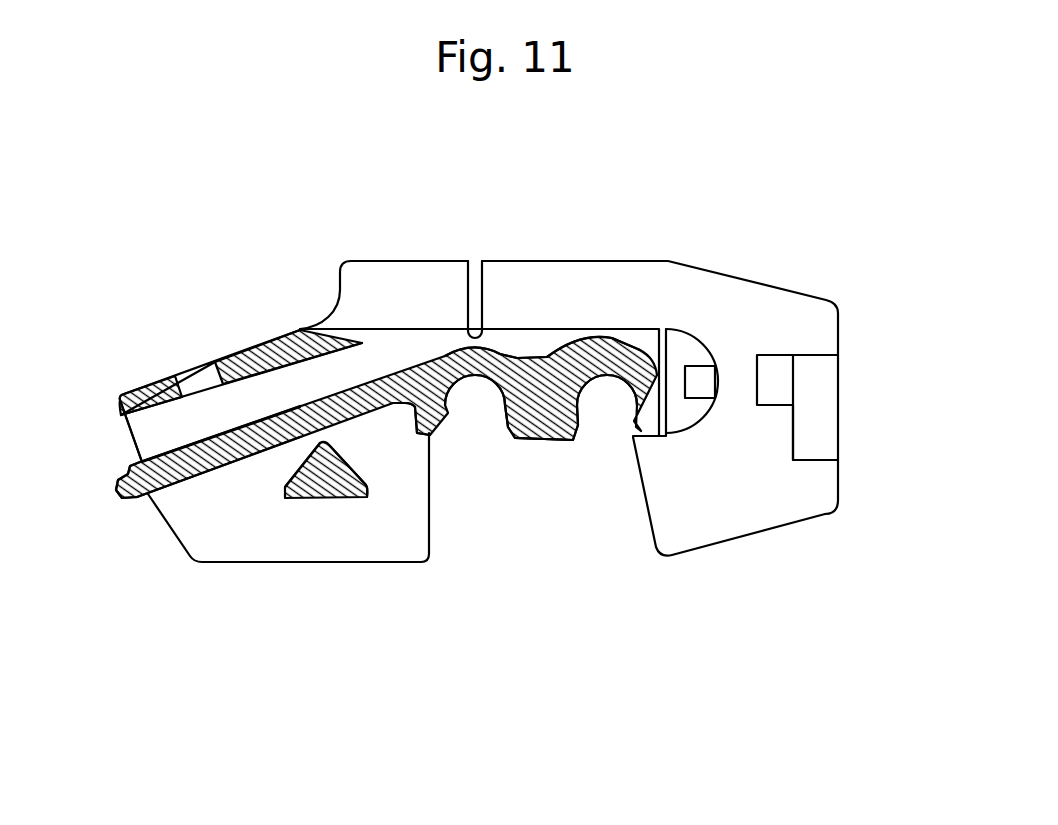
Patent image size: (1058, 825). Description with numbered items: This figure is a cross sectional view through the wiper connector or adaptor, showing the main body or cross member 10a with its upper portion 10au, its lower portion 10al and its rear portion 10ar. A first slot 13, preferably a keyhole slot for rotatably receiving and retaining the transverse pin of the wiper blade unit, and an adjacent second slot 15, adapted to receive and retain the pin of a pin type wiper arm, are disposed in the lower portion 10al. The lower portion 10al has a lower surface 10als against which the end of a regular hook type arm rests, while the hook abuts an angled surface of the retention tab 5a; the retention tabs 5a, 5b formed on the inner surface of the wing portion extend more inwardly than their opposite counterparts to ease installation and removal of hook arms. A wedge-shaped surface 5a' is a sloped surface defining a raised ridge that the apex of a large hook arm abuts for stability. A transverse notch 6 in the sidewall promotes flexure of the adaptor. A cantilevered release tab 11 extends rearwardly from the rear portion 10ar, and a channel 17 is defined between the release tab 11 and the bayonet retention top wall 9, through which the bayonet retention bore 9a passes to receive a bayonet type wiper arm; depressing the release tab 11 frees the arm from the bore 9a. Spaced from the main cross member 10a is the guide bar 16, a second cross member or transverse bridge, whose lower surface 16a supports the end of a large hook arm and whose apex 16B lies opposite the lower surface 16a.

The transverse notch 6 is at (461, 238).
The main body member 10a is at (396, 350).
The upper portion 10au is at (550, 357).
The lower portion 10al is at (513, 438).
The lower surface 10als is at (540, 441).
The rear portion 10ar is at (393, 403).
The retention tab 5a is at (802, 343).
The wedge-shaped surface 5a' is at (864, 432).
The retention tab 5b is at (698, 378).
The top wall 9 is at (252, 360).
The bayonet retention bore 9a is at (195, 383).
The cantilevered release tab 11 is at (120, 486).
The first slot 13 is at (606, 443).
The second slot 15 is at (477, 443).
The guide bar 16 is at (313, 478).
The lower surface 16a is at (348, 498).
The apex 16B is at (285, 487).
The channel 17 is at (301, 383).